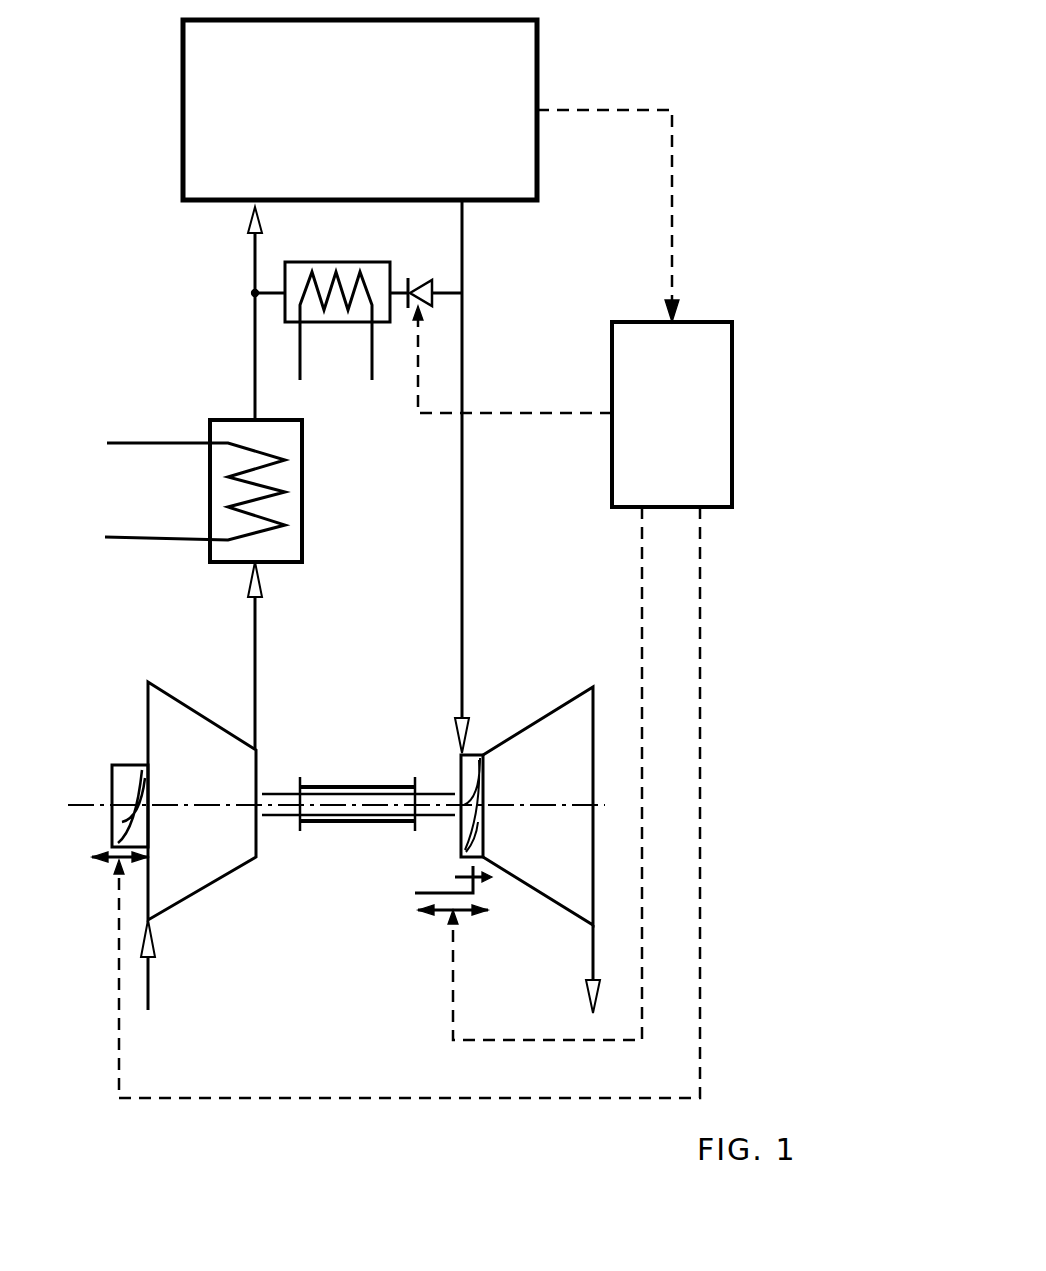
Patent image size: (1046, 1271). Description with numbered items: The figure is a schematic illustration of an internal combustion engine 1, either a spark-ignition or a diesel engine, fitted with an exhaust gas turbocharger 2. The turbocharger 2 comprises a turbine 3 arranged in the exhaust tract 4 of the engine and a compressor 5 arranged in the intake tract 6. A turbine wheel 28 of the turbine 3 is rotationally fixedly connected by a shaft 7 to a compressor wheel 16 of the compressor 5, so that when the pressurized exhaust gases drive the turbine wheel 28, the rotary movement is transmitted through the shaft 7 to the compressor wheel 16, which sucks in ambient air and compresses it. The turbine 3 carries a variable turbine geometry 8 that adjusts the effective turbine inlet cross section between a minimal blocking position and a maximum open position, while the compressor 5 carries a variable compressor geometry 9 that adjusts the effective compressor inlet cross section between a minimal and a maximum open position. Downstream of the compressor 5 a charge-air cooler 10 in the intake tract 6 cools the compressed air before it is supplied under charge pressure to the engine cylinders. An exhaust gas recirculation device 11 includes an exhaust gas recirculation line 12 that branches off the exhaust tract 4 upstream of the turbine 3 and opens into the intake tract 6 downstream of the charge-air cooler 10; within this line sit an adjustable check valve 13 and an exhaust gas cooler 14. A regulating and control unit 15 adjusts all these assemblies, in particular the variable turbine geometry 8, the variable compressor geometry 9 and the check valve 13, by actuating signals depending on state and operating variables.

The internal combustion engine 1 is at (539, 47).
The exhaust gas turbocharger 2 is at (359, 781).
The turbine 3 is at (541, 823).
The turbine wheel 28 is at (539, 715).
The exhaust tract 4 is at (464, 585).
The compressor 5 is at (198, 846).
The compressor wheel 16 is at (208, 878).
The intake tract 6 is at (258, 633).
The shaft 7 is at (280, 816).
The variable turbine geometry 8 is at (458, 772).
The variable compressor geometry 9 is at (112, 795).
The charge-air cooler 10 is at (302, 515).
The exhaust gas recirculation device 11 is at (342, 318).
The exhaust gas recirculation line 12 is at (270, 296).
The adjustable check valve 13 is at (428, 278).
The exhaust gas cooler 14 is at (334, 322).
The regulating and control unit 15 is at (733, 468).